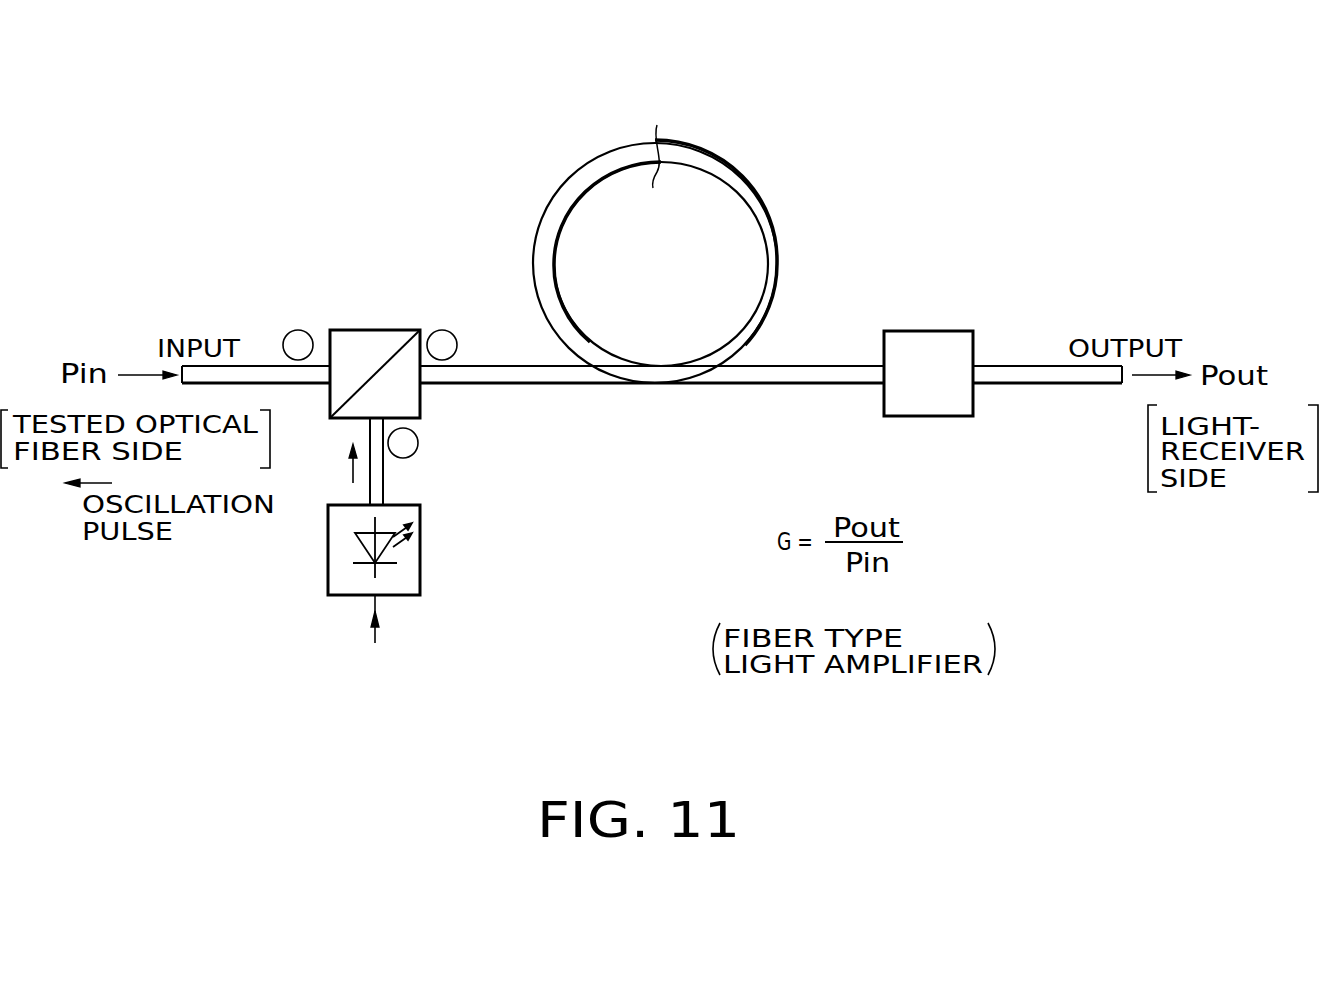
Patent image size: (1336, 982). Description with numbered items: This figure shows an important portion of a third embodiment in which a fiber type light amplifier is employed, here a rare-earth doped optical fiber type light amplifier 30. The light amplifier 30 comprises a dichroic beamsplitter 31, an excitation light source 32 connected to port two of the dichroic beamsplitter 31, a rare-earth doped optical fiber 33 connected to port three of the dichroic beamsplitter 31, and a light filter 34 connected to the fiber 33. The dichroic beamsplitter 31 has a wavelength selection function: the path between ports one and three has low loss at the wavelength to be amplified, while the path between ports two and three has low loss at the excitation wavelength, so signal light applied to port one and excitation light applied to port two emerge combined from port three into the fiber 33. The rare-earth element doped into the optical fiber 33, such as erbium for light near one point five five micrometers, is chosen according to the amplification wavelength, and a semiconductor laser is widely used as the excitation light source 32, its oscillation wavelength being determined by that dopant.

The rare-earth doped optical fiber type light amplifier 30 is at (657, 510).
The dichroic beamsplitter 31 is at (420, 405).
The excitation light source 32 is at (328, 567).
The rare-earth doped optical fiber 33 is at (753, 197).
The light filter 34 is at (934, 416).